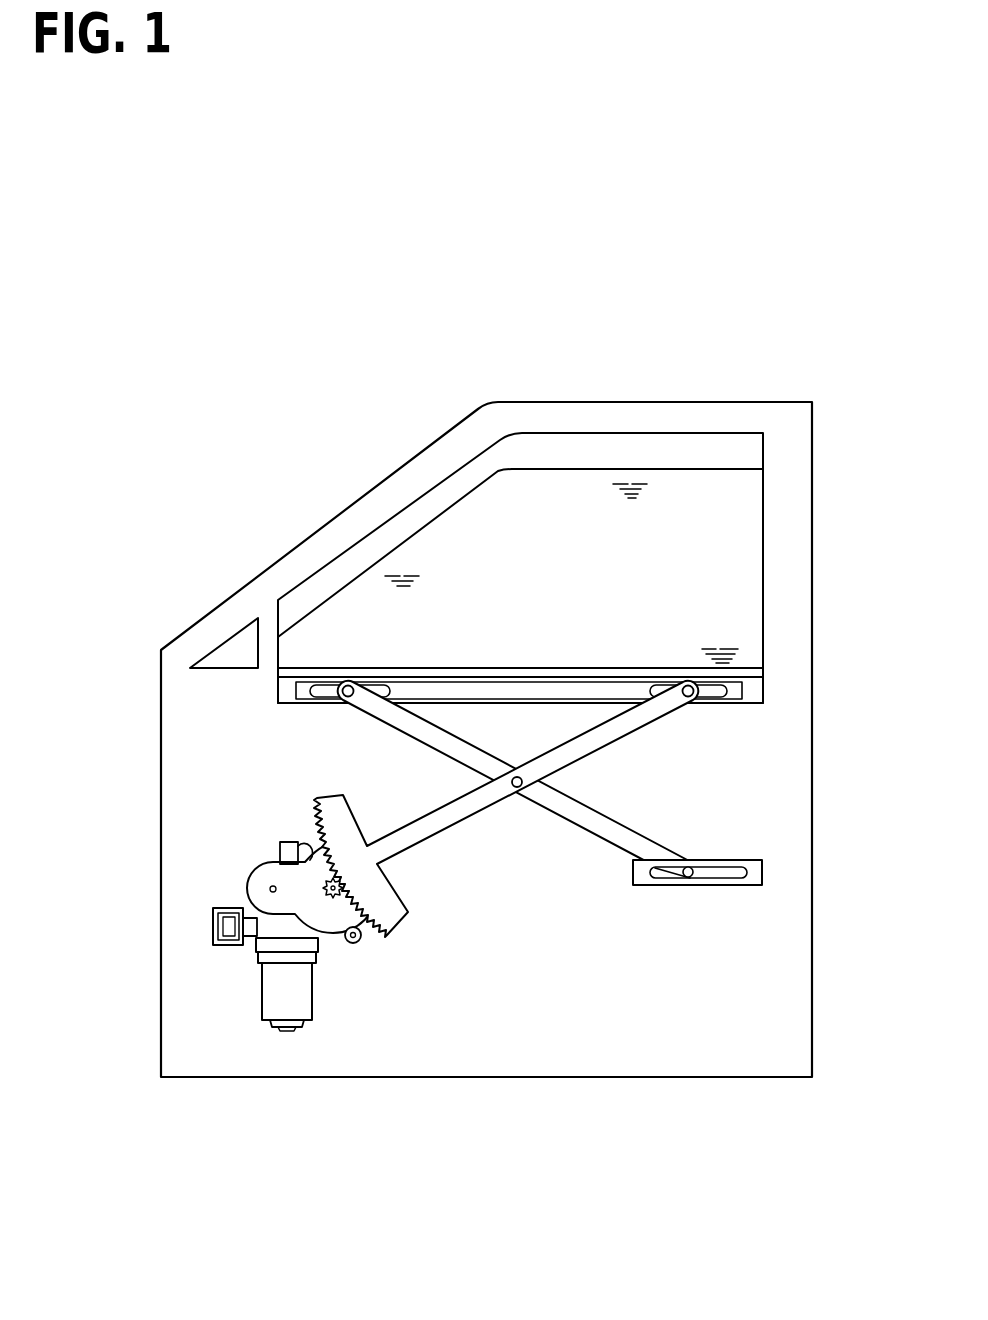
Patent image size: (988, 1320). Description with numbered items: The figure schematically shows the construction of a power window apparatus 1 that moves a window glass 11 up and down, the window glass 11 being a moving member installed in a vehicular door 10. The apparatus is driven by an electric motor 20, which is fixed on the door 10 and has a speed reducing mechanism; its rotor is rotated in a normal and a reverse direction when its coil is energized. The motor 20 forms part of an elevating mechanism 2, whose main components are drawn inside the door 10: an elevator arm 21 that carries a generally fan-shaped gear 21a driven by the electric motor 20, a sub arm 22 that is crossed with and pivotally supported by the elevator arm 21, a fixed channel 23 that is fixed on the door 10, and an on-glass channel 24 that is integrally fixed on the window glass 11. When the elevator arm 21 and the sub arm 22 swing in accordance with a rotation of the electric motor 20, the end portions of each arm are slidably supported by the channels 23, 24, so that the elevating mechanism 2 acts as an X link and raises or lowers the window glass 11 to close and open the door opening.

The power window apparatus 1 is at (540, 709).
The elevating mechanism 2 is at (500, 909).
The vehicular door 10 is at (787, 777).
The window glass 11 is at (548, 485).
The electric motor 20 is at (272, 998).
The elevator arm 21 is at (508, 851).
The fan-shaped gear 21a is at (395, 912).
The sub arm 22 is at (572, 813).
The fixed channel 23 is at (718, 878).
The on-glass channel 24 is at (737, 688).